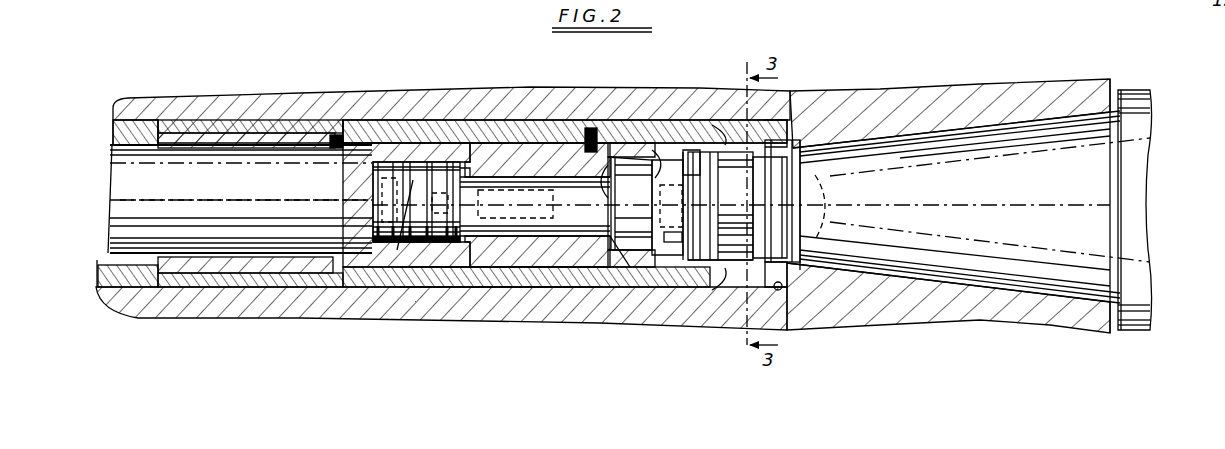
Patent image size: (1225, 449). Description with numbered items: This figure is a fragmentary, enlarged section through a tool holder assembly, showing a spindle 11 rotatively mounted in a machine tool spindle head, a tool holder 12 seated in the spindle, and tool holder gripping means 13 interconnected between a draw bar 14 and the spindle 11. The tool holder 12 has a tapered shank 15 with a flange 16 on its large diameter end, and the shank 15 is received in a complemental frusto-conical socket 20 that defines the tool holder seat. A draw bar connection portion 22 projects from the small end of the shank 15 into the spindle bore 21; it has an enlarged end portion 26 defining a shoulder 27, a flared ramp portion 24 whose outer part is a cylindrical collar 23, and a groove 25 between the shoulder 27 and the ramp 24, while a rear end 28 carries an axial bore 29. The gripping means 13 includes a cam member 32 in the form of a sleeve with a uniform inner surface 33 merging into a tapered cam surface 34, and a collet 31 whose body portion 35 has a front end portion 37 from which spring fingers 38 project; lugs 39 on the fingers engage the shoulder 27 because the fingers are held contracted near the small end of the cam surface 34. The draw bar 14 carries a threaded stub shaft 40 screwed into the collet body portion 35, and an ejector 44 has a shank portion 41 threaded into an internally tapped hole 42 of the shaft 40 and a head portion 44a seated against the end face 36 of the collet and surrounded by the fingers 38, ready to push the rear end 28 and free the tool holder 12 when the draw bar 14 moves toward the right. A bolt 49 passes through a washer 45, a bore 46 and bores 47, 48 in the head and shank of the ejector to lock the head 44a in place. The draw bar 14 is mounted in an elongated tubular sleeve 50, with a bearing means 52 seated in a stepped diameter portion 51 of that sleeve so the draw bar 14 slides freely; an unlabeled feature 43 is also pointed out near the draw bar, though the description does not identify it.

The spindle 11 is at (907, 305).
The tool holder 12 is at (1040, 292).
The tool holder gripping means 13 is at (490, 262).
The draw bar 14 is at (297, 228).
The shank 15 is at (1150, 266).
The flange 16 is at (1148, 147).
The socket 20 is at (1008, 126).
The spindle bore 21 is at (525, 127).
The draw bar connection portion 22 is at (878, 256).
The cylindrical collar 23 is at (803, 150).
The flared ramp portion 24 is at (990, 167).
The groove 25 is at (772, 140).
The enlarged end portion 26 is at (706, 262).
The shoulder 27 is at (737, 206).
The rear end 28 is at (684, 170).
The axial bore 29 is at (840, 210).
The collet 31 is at (591, 128).
The cam member 32 is at (478, 127).
The inner surface 33 is at (420, 142).
The cam surface 34 is at (779, 292).
The body portion 35 is at (538, 285).
The end face 36 is at (741, 206).
The front end portion 37 is at (592, 270).
The spring fingers 38 is at (628, 150).
The lug 39 is at (720, 128).
The threaded stub shaft 40 is at (378, 283).
The shank portion 41 is at (472, 192).
The internally tapped hole 42 is at (372, 202).
The rod shoulder 43 is at (378, 162).
The ejector 44 is at (620, 270).
The head portion 44a is at (562, 236).
The washer 45 is at (646, 170).
The bore 46 is at (667, 206).
The bore in head portion 47 is at (650, 200).
The bore in shank portion 48 is at (548, 200).
The bolt 49 is at (680, 238).
The tubular sleeve 50 is at (152, 130).
The stepped diameter portion 51 is at (298, 138).
The bearing means 52 is at (232, 140).